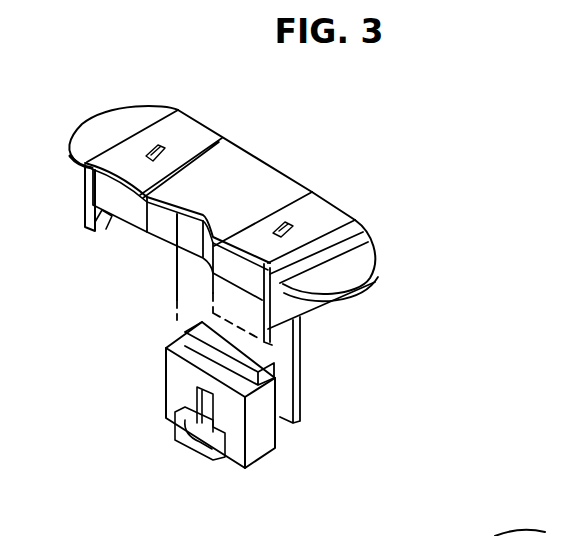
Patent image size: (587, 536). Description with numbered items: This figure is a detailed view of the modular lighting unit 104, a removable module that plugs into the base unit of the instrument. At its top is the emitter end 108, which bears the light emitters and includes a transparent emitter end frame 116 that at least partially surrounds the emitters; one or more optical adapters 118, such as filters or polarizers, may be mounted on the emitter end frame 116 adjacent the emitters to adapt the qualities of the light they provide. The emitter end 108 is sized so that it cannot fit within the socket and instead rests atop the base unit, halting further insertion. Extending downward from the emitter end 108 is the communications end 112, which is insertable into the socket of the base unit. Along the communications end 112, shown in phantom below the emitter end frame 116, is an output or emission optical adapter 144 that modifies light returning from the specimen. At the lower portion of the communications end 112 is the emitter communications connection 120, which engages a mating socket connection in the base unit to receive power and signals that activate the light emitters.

The modular lighting unit 104 is at (449, 167).
The emitter end 108 is at (256, 164).
The emitter end frame 116 is at (270, 195).
The optical adapter 118 is at (163, 230).
The communications end 112 is at (292, 354).
The optical adapter 144 is at (213, 312).
The emitter communications connection 120 is at (260, 449).